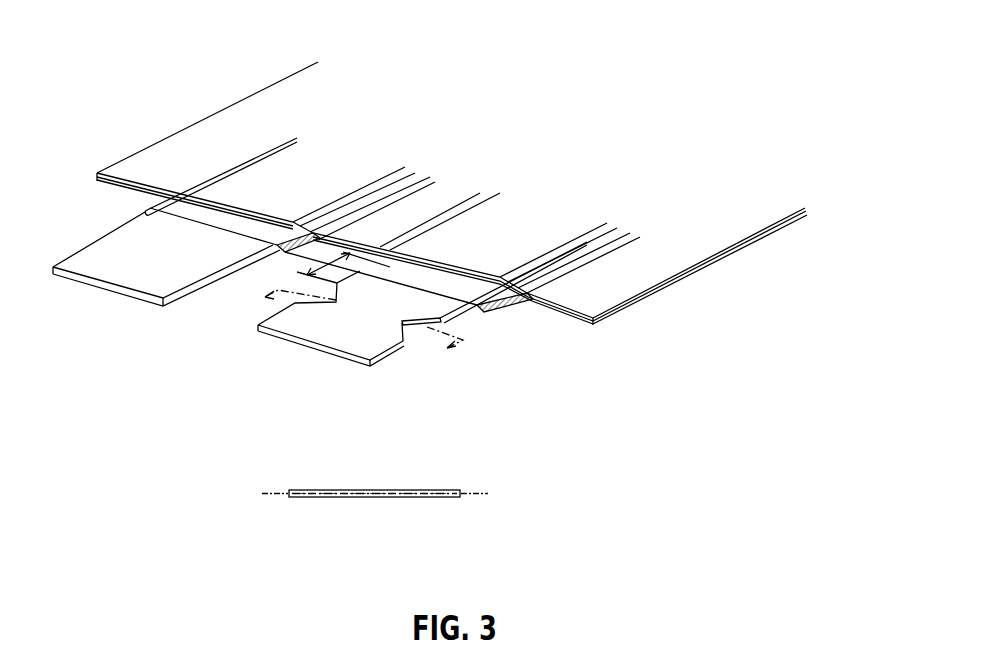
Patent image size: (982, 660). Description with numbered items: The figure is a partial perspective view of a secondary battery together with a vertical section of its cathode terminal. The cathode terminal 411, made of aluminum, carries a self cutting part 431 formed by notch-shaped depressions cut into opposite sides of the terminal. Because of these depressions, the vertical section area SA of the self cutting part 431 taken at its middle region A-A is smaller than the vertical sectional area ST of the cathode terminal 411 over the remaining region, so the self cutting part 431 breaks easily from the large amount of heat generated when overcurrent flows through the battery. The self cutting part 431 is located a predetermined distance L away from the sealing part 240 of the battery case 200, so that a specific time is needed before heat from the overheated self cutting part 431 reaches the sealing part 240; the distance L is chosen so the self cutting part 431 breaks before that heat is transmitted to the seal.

The battery case 200 is at (232, 66).
The sealing part 240 is at (610, 289).
The cathode terminal 411 is at (340, 327).
The self cutting part 431 is at (474, 330).
The vertical sectional area of the cathode terminal ST is at (440, 490).
The vertical section area of the self cutting part SA is at (342, 496).